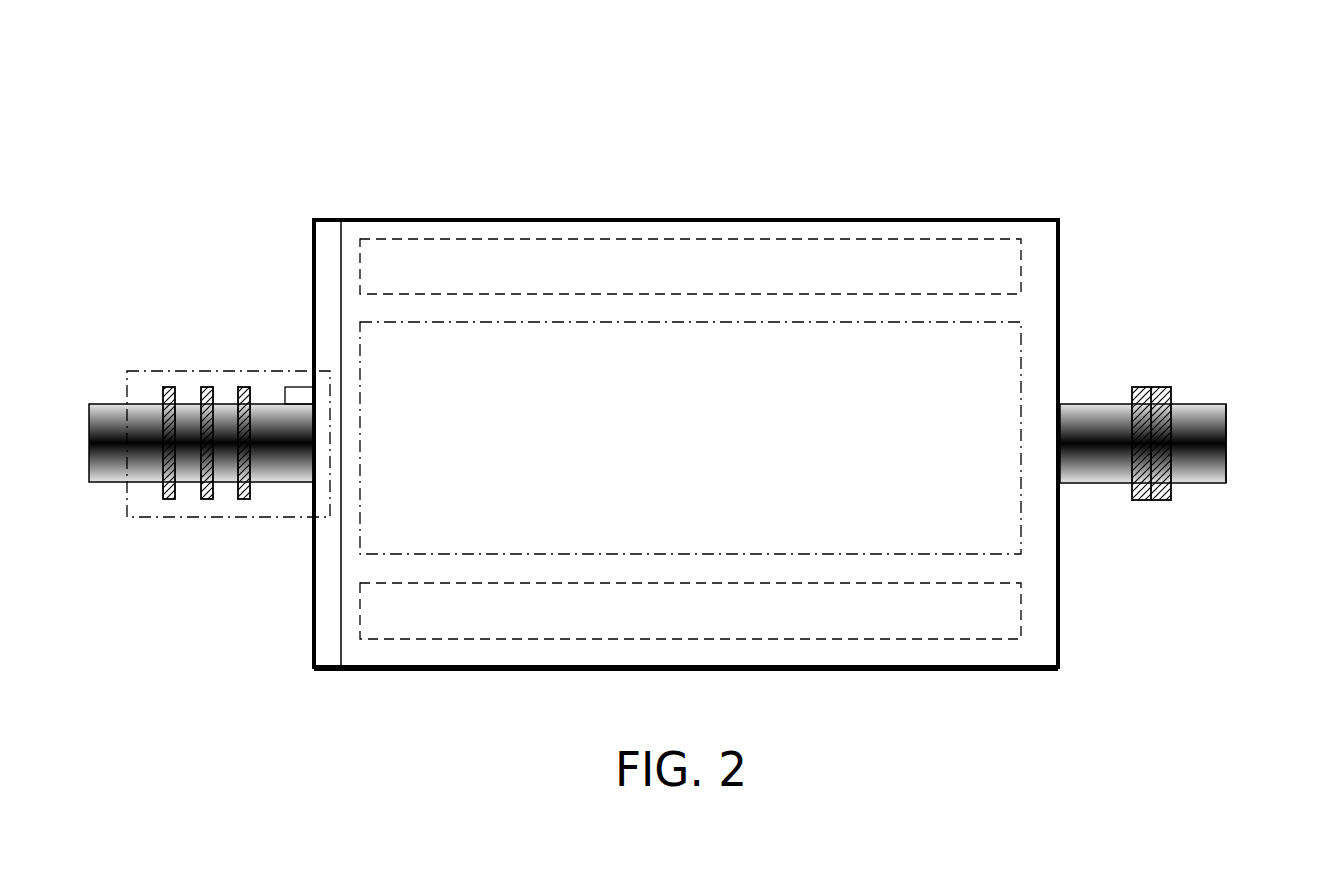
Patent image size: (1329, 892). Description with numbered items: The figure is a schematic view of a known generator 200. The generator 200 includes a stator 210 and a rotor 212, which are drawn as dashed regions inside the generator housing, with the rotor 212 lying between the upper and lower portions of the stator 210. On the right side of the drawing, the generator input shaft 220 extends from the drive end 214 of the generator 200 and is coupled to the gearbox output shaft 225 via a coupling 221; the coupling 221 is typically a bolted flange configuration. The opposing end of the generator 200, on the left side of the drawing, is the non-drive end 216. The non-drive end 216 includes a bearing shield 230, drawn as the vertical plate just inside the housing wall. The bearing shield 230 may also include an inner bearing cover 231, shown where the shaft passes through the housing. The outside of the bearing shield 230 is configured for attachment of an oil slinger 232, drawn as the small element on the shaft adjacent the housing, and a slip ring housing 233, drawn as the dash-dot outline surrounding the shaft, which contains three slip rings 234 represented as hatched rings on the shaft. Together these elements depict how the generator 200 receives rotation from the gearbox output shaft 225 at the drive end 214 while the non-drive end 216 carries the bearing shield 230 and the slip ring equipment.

The generator 200 is at (694, 389).
The stator 210 is at (597, 278).
The rotor 212 is at (700, 450).
The drive end 214 is at (1138, 266).
The non-drive end 216 is at (250, 650).
The generator input shaft 220 is at (1100, 463).
The coupling 221 is at (1150, 387).
The gearbox output shaft 225 is at (1230, 443).
The bearing shield 230 is at (327, 238).
The inner bearing cover 231 is at (318, 492).
The oil slinger 232 is at (292, 388).
The slip ring housing 233 is at (138, 370).
The slip rings 234 is at (243, 500).